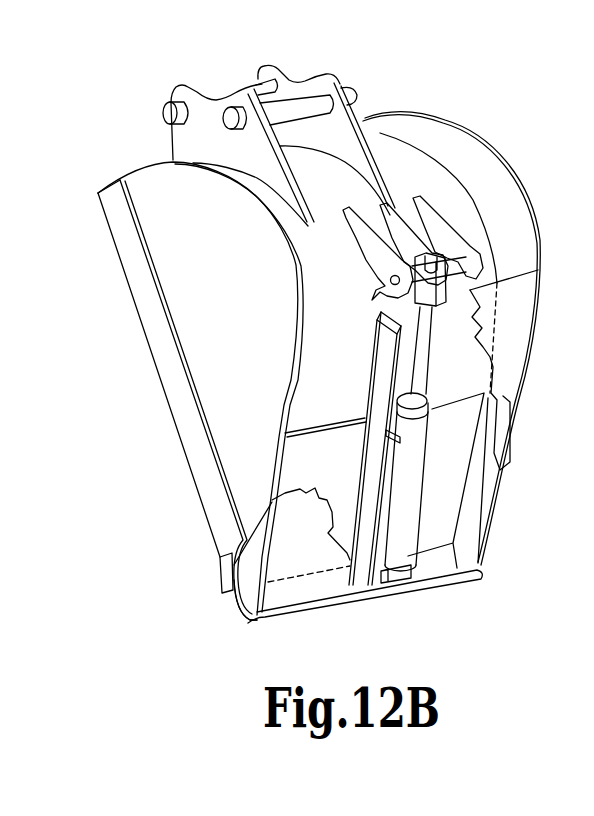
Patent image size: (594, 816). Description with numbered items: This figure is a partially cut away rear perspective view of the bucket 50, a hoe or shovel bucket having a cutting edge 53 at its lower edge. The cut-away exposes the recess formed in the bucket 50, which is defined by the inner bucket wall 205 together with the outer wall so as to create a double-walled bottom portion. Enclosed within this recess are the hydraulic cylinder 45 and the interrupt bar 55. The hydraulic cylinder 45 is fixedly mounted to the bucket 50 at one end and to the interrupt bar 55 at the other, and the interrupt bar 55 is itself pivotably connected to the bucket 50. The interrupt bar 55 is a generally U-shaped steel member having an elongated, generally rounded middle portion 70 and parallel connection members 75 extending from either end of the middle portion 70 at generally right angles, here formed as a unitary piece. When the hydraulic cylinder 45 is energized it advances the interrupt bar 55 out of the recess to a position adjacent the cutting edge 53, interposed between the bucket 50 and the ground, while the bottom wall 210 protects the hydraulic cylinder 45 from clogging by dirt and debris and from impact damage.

The bucket 50 is at (427, 62).
The inner bucket wall 205 is at (305, 383).
The bottom wall 210 is at (513, 276).
The hydraulic cylinder 45 is at (418, 432).
The connection members 75 is at (472, 518).
The middle portion 70 is at (381, 591).
The cutting edge 53 is at (221, 590).
The interrupt bar 55 is at (250, 628).